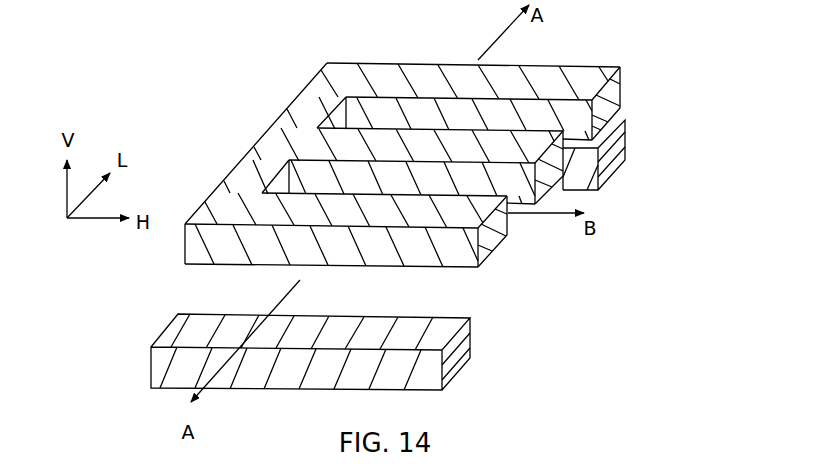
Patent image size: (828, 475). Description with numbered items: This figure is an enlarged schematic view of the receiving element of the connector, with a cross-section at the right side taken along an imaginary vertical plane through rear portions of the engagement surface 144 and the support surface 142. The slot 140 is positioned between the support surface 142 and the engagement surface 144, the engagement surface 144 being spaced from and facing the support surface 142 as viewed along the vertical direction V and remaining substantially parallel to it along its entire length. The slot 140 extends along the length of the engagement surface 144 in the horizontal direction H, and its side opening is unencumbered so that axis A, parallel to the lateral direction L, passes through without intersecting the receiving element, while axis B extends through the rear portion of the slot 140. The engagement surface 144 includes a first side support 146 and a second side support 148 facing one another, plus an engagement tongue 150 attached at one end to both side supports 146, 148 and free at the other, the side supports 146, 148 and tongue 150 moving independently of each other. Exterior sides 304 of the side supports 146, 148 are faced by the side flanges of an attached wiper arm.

The slot 140 is at (209, 285).
The support surface 142 is at (617, 140).
The engagement surface 144 is at (480, 252).
The first side support 146 is at (610, 65).
The second side support 148 is at (428, 262).
The engagement tongue 150 is at (538, 147).
The exterior sides 304 is at (537, 65).